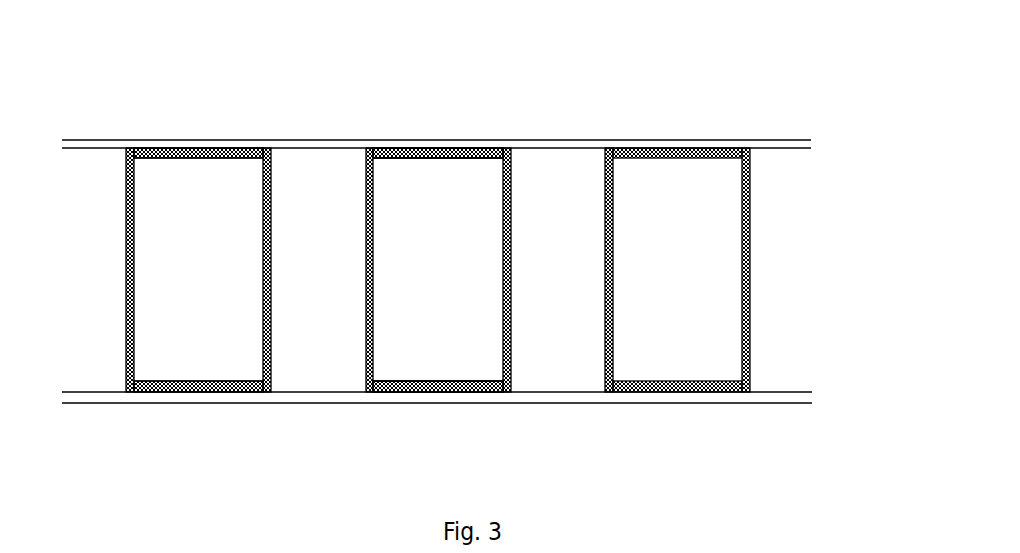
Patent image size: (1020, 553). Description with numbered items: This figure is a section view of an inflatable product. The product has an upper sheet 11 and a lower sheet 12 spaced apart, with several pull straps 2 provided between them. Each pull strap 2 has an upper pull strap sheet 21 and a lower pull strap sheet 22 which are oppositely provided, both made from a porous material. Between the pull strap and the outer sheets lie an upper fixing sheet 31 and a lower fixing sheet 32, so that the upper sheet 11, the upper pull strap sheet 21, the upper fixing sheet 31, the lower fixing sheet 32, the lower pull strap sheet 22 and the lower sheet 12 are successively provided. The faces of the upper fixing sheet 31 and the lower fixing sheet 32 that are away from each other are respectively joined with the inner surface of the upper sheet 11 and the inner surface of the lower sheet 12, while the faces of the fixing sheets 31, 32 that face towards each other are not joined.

The pull strap 2 is at (125, 207).
The upper sheet 11 is at (767, 138).
The lower sheet 12 is at (693, 404).
The upper pull strap sheet 21 is at (460, 148).
The lower pull strap sheet 22 is at (460, 392).
The upper fixing sheet 31 is at (395, 158).
The lower fixing sheet 32 is at (380, 383).